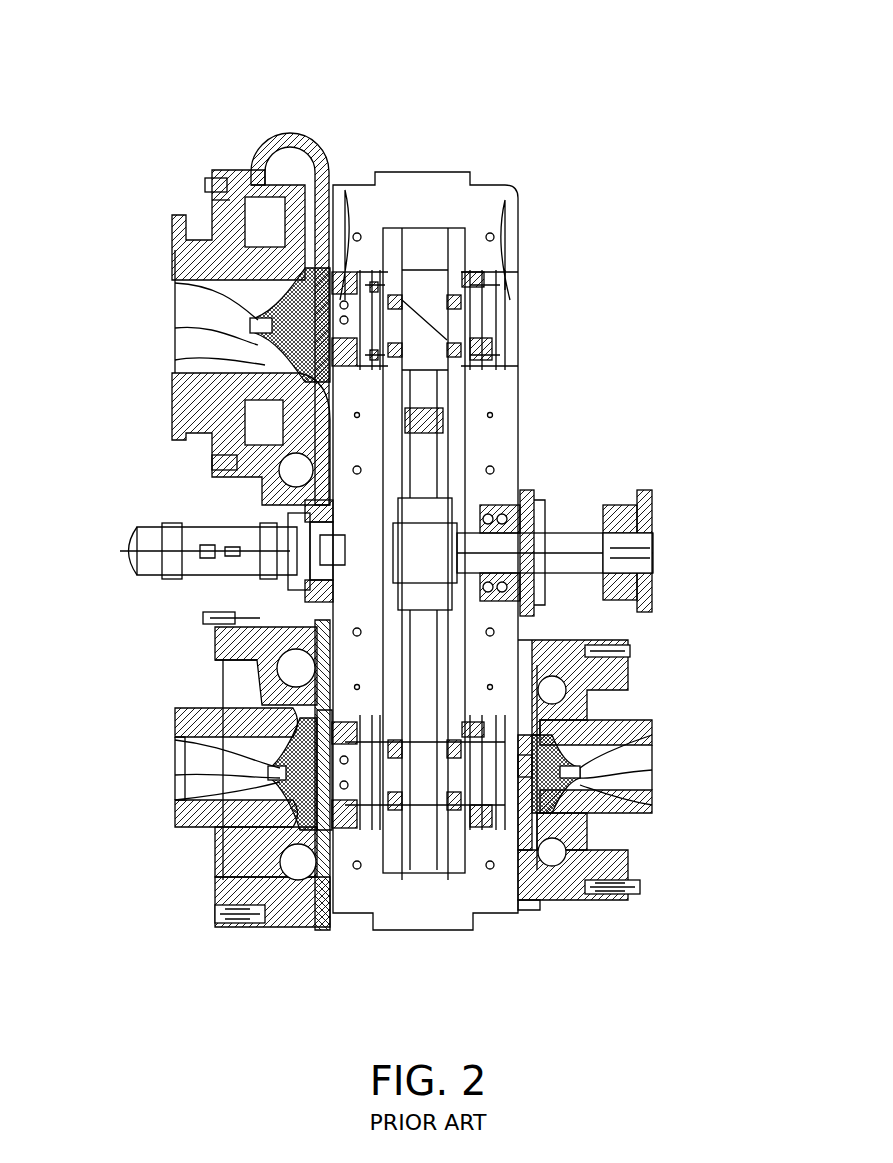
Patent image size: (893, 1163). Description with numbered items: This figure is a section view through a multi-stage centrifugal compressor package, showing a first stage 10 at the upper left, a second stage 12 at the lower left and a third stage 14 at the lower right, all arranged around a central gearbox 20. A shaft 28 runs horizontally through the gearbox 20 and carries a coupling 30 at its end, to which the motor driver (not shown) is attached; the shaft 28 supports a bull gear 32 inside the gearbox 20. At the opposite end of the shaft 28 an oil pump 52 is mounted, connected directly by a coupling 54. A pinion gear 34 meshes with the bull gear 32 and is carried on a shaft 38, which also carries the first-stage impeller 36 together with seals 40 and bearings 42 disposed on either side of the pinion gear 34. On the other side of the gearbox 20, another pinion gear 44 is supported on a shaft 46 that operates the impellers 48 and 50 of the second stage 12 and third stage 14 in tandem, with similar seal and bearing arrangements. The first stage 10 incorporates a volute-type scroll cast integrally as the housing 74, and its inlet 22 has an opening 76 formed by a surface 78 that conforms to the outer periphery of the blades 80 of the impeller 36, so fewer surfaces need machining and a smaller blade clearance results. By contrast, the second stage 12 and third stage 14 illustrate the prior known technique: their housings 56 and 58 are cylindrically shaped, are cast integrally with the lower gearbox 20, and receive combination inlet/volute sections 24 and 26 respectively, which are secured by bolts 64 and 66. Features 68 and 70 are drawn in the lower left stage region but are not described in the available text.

The first stage 10 is at (258, 112).
The second stage 12 is at (237, 948).
The third stage 14 is at (655, 905).
The gearbox 20 is at (525, 222).
The inlet 22 is at (208, 192).
The inlet section 24 is at (205, 893).
The inlet 26 is at (648, 683).
The shaft 28 is at (565, 545).
The coupling 30 is at (620, 505).
The bull gear 32 is at (455, 452).
The pinion gear 34 is at (452, 290).
The impeller 36 is at (260, 346).
The shaft 38 is at (262, 318).
The seals 40 is at (345, 275).
The bearings 42 is at (378, 270).
The pinion gear 44 is at (438, 772).
The shaft 46 is at (568, 772).
The impeller 48 is at (280, 772).
The impeller 50 is at (572, 762).
The oil pump 52 is at (210, 527).
The coupling 54 is at (345, 505).
The housing 56 is at (325, 920).
The housing 58 is at (530, 893).
The bolts 64 is at (212, 618).
The bolts 66 is at (612, 647).
The inlet duct 68 is at (228, 745).
The volute 70 is at (260, 700).
The volute scroll housing 74 is at (288, 140).
The opening 76 is at (205, 305).
The surface 78 is at (178, 400).
The blades 80 is at (265, 366).